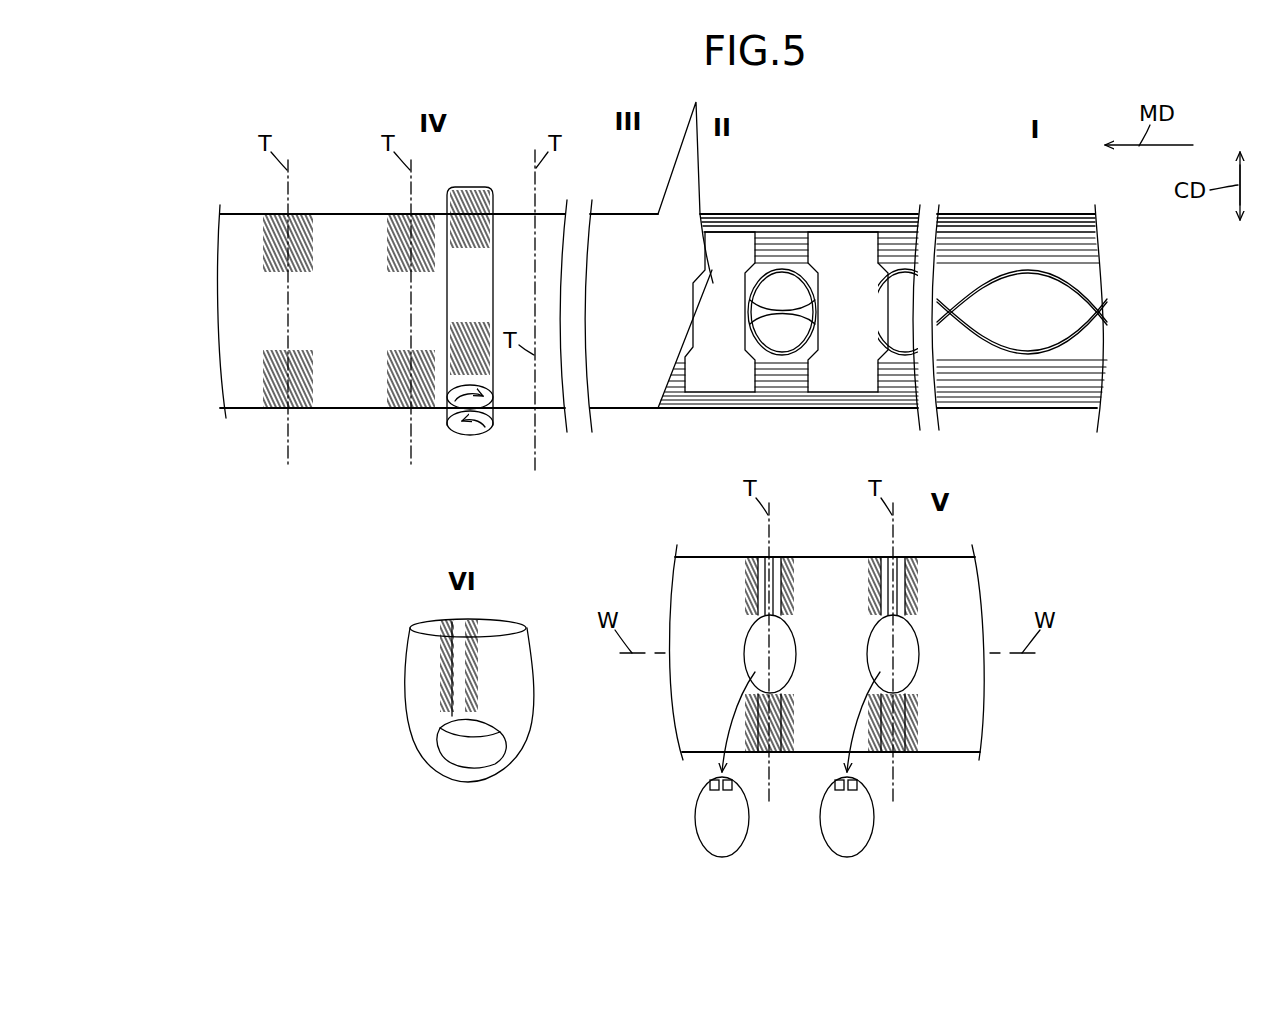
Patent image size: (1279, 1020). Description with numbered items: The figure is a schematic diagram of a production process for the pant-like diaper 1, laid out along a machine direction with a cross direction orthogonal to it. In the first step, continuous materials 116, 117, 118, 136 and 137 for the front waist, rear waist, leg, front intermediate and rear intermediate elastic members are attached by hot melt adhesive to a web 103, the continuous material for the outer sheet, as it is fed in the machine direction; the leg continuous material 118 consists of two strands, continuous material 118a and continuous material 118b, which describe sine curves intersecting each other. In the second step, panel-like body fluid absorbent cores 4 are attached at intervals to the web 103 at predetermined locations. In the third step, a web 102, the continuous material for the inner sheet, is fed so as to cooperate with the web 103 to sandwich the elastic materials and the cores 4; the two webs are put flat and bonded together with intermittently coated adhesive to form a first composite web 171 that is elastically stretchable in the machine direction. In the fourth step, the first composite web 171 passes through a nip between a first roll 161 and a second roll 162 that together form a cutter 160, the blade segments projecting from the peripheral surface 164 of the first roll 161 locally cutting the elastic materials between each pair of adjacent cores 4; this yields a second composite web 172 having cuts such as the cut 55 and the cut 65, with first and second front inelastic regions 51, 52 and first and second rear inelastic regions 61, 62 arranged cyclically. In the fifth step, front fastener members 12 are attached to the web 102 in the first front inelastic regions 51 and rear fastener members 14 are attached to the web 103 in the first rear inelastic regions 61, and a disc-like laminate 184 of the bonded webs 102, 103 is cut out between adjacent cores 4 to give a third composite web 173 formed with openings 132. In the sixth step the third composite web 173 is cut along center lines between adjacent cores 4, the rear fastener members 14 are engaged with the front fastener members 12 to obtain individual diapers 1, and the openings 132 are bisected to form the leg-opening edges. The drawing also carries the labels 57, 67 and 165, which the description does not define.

The diaper 1 is at (532, 611).
The body fluid absorbent core 4 is at (719, 382).
The front fastener member 12 is at (896, 753).
The rear fastener member 14 is at (883, 565).
The first front inelastic region 51 is at (281, 410).
The second front inelastic region 52 is at (270, 410).
The cut 55 is at (417, 410).
The weld seal portion 57 is at (440, 411).
The first rear inelastic region 61 is at (283, 226).
The second rear inelastic region 62 is at (267, 222).
The cut 65 is at (417, 226).
The weld seal portion 67 is at (431, 228).
The web 102 is at (684, 173).
The web 103 is at (967, 240).
The continuous material for front waist elastic members 116 is at (812, 406).
The continuous material for rear waist elastic members 117 is at (733, 222).
The continuous material for leg elastic members 118 is at (989, 312).
The continuous material 118a is at (1065, 302).
The continuous material 118b is at (1065, 324).
The opening 132 is at (906, 655).
The continuous material for front intermediate elastic members 136 is at (885, 396).
The continuous material for rear intermediate elastic members 137 is at (888, 245).
The cutter 160 is at (476, 334).
The first roll 161 is at (471, 406).
The second roll 162 is at (482, 430).
The peripheral surface 164 is at (483, 267).
The seal pattern 165 is at (471, 190).
The first composite web 171 is at (553, 410).
The second composite web 172 is at (343, 411).
The third composite web 173 is at (692, 756).
The disc-like laminate 184 is at (735, 830).